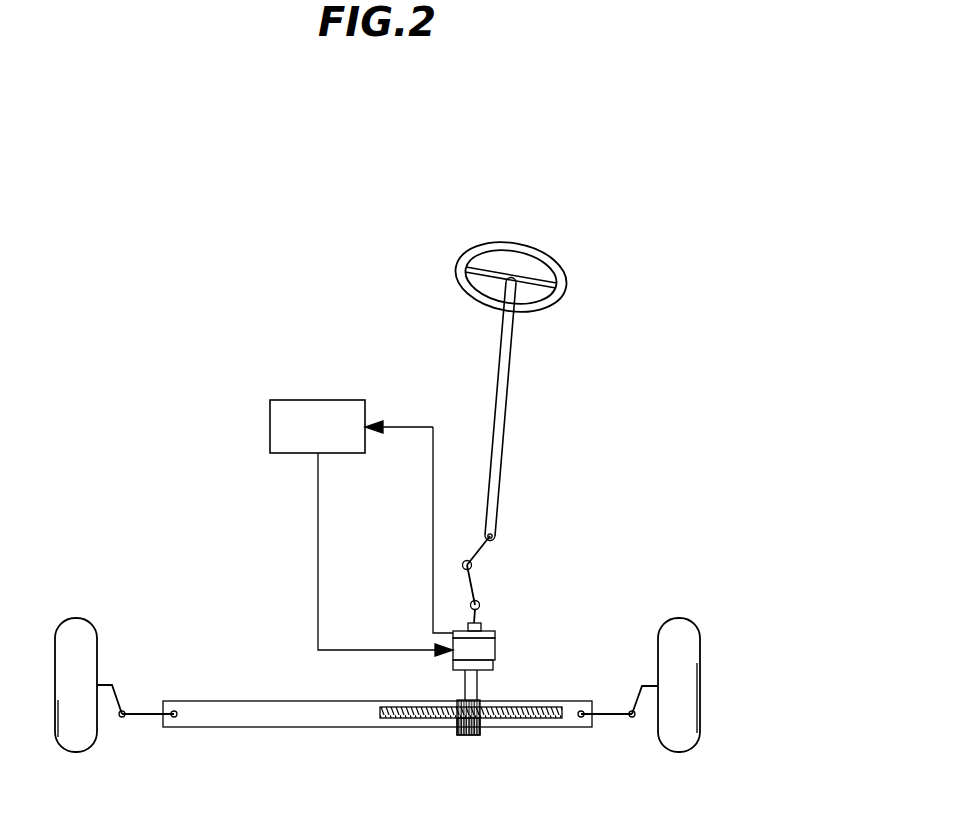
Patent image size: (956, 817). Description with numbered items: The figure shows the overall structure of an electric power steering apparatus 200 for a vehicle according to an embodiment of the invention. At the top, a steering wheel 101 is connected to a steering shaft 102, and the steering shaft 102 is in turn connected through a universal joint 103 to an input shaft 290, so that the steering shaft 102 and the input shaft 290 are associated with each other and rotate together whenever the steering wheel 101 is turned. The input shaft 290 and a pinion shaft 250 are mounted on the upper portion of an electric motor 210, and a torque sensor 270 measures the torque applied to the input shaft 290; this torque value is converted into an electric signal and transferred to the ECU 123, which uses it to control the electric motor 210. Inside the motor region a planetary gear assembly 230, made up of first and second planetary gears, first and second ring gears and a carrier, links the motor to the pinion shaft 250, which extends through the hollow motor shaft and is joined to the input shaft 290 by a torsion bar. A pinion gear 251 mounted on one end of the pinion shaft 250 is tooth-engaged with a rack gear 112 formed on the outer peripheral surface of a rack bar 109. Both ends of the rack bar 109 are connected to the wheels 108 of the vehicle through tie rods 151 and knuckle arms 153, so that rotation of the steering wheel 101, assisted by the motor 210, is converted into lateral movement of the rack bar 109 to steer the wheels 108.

The electric power steering apparatus 200 is at (152, 238).
The steering wheel 101 is at (456, 266).
The steering shaft 102 is at (512, 370).
The universal joint 103 is at (488, 545).
The ECU 123 is at (323, 400).
The wheels 108 is at (80, 628).
The tie rods 151 is at (143, 710).
The knuckle arms 153 is at (650, 686).
The rack bar 109 is at (278, 723).
The rack gear 112 is at (530, 723).
The input shaft 290 is at (487, 623).
The torque sensor 270 is at (495, 635).
The electric motor 210 is at (500, 650).
The planetary gear assembly 230 is at (448, 665).
The pinion shaft 250 is at (480, 684).
The pinion gear 251 is at (463, 737).